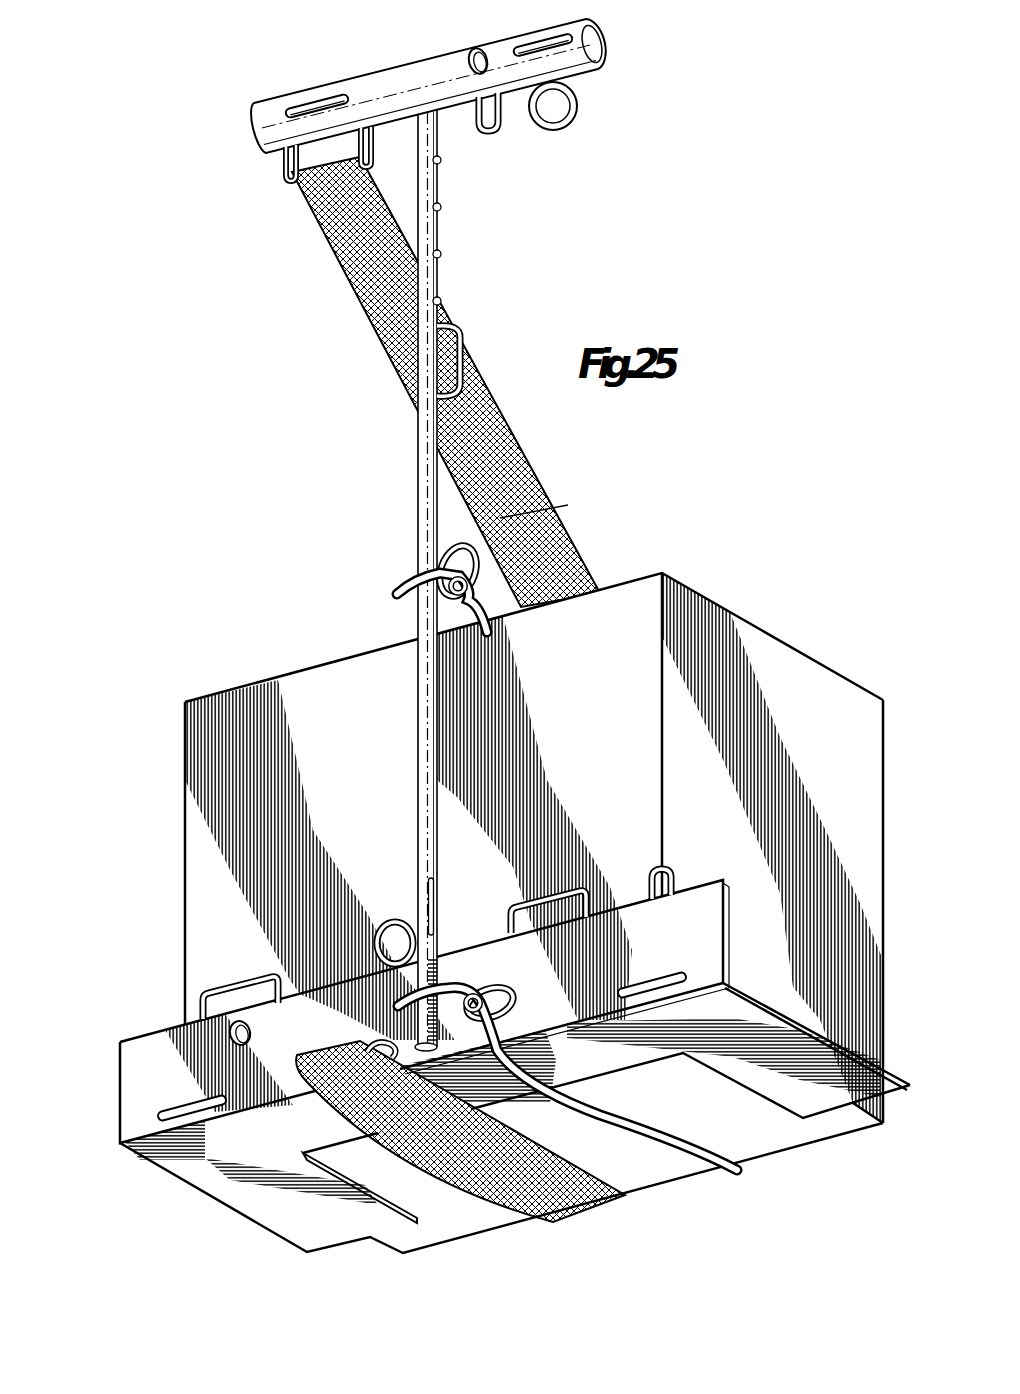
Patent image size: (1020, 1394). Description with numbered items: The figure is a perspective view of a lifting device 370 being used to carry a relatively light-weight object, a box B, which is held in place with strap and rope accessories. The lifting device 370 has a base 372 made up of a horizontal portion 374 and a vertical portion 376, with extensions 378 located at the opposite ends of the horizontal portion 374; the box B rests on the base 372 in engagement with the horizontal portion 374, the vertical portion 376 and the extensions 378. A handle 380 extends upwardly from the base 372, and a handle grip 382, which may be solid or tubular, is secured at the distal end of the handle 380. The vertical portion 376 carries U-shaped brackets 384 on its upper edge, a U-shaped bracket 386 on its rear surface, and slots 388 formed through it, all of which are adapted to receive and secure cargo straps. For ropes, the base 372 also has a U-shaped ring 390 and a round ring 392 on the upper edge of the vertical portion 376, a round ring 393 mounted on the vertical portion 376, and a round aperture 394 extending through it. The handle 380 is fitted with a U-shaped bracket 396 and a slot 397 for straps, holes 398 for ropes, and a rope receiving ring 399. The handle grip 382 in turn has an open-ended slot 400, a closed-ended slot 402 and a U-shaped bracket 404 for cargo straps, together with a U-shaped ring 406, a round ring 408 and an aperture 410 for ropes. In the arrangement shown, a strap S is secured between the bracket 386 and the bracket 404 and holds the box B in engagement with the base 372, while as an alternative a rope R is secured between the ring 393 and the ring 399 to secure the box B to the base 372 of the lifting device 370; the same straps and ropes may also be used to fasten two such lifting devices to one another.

The lifting device 370 is at (310, 438).
The base 372 is at (141, 1033).
The horizontal portion 374 is at (246, 1173).
The vertical portion 376 is at (328, 1035).
The extensions 378 is at (341, 1236).
The handle 380 is at (420, 513).
The handle grip 382 is at (347, 77).
The U-shaped brackets 384 is at (547, 897).
The U-shaped bracket 386 is at (297, 1073).
The slots 388 is at (173, 1110).
The U-shaped ring 390 is at (668, 867).
The round ring 392 is at (393, 921).
The round ring 393 is at (500, 992).
The round aperture 394 is at (232, 1040).
The U-shaped bracket 396 is at (477, 384).
The slot 397 is at (437, 908).
The holes 398 is at (441, 209).
The rope receiving ring 399 is at (560, 506).
The open-ended slot 400 is at (528, 37).
The closed-ended slot 402 is at (298, 100).
The U-shaped bracket 404 is at (284, 167).
The U-shaped ring 406 is at (488, 133).
The round ring 408 is at (571, 117).
The aperture 410 is at (468, 58).
The strap S is at (387, 347).
The box B is at (290, 696).
The rope R is at (488, 622).